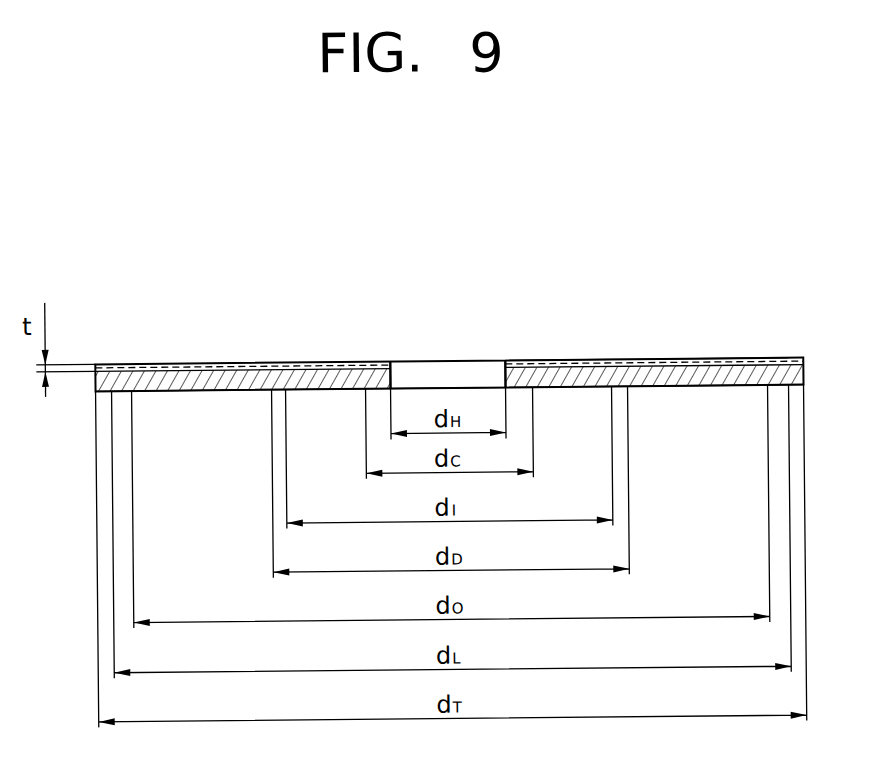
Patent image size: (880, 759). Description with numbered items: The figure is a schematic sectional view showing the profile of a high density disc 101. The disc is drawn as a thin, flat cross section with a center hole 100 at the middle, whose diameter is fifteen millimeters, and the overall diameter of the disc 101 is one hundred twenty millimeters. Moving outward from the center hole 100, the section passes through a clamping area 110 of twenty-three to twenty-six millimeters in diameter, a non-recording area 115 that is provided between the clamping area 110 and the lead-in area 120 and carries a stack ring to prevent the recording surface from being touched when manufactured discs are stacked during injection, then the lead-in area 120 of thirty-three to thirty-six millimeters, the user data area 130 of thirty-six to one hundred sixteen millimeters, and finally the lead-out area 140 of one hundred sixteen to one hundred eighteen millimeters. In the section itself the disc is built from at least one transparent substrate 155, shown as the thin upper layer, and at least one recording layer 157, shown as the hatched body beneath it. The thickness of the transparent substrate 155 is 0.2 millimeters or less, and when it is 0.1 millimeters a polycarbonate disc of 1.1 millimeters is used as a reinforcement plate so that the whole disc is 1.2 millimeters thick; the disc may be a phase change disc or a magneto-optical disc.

The high density disc 101 is at (754, 240).
The center hole 100 is at (394, 361).
The clamping area 110 is at (522, 362).
The non-recording area 115 is at (577, 362).
The lead-in area 120 is at (619, 362).
The user data area 130 is at (700, 362).
The lead-out area 140 is at (778, 362).
The transparent substrate 155 is at (190, 360).
The recording layer 157 is at (194, 389).